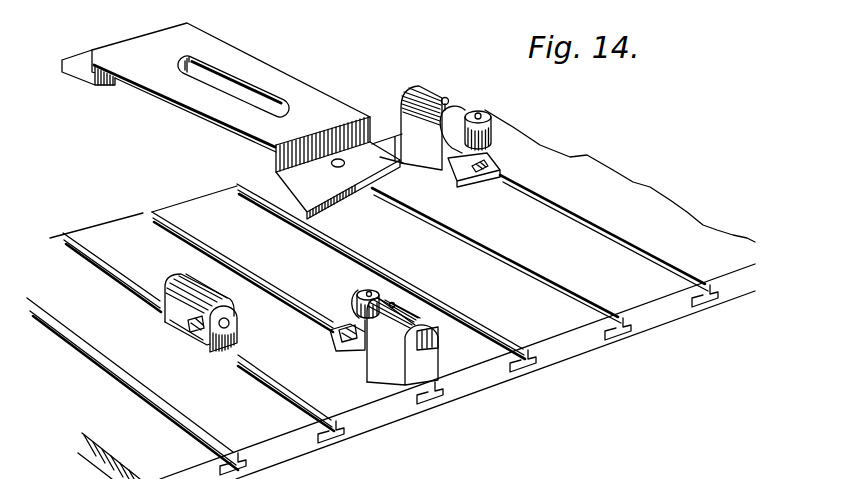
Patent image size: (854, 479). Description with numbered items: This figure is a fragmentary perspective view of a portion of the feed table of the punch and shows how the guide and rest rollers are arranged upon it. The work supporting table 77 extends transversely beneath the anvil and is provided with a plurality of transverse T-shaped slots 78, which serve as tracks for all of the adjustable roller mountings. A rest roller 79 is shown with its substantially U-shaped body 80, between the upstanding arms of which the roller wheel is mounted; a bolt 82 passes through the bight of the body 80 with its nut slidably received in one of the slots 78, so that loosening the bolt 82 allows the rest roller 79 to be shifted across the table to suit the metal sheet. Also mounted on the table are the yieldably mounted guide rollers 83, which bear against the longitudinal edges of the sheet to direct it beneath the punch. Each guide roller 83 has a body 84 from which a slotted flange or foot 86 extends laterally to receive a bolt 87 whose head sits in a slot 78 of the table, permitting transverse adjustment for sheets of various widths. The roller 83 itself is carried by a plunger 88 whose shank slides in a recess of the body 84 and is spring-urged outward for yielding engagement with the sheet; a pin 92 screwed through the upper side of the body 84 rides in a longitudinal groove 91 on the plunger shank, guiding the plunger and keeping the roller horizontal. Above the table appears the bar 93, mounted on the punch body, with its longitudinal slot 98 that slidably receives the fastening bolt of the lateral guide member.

The work supporting table 77 is at (578, 352).
The T-shaped slots 78 is at (620, 242).
The rest rollers 79 is at (209, 296).
The U-shaped body 80 is at (238, 335).
The bolt 82 is at (182, 328).
The guide rollers 83 is at (490, 140).
The body 84 is at (405, 318).
The flange or foot 86 is at (464, 170).
The bolt 87 is at (486, 176).
The plunger 88 is at (440, 337).
The groove 91 is at (519, 468).
The pin 92 is at (450, 98).
The bar 93 is at (247, 65).
The slot 98 is at (270, 92).